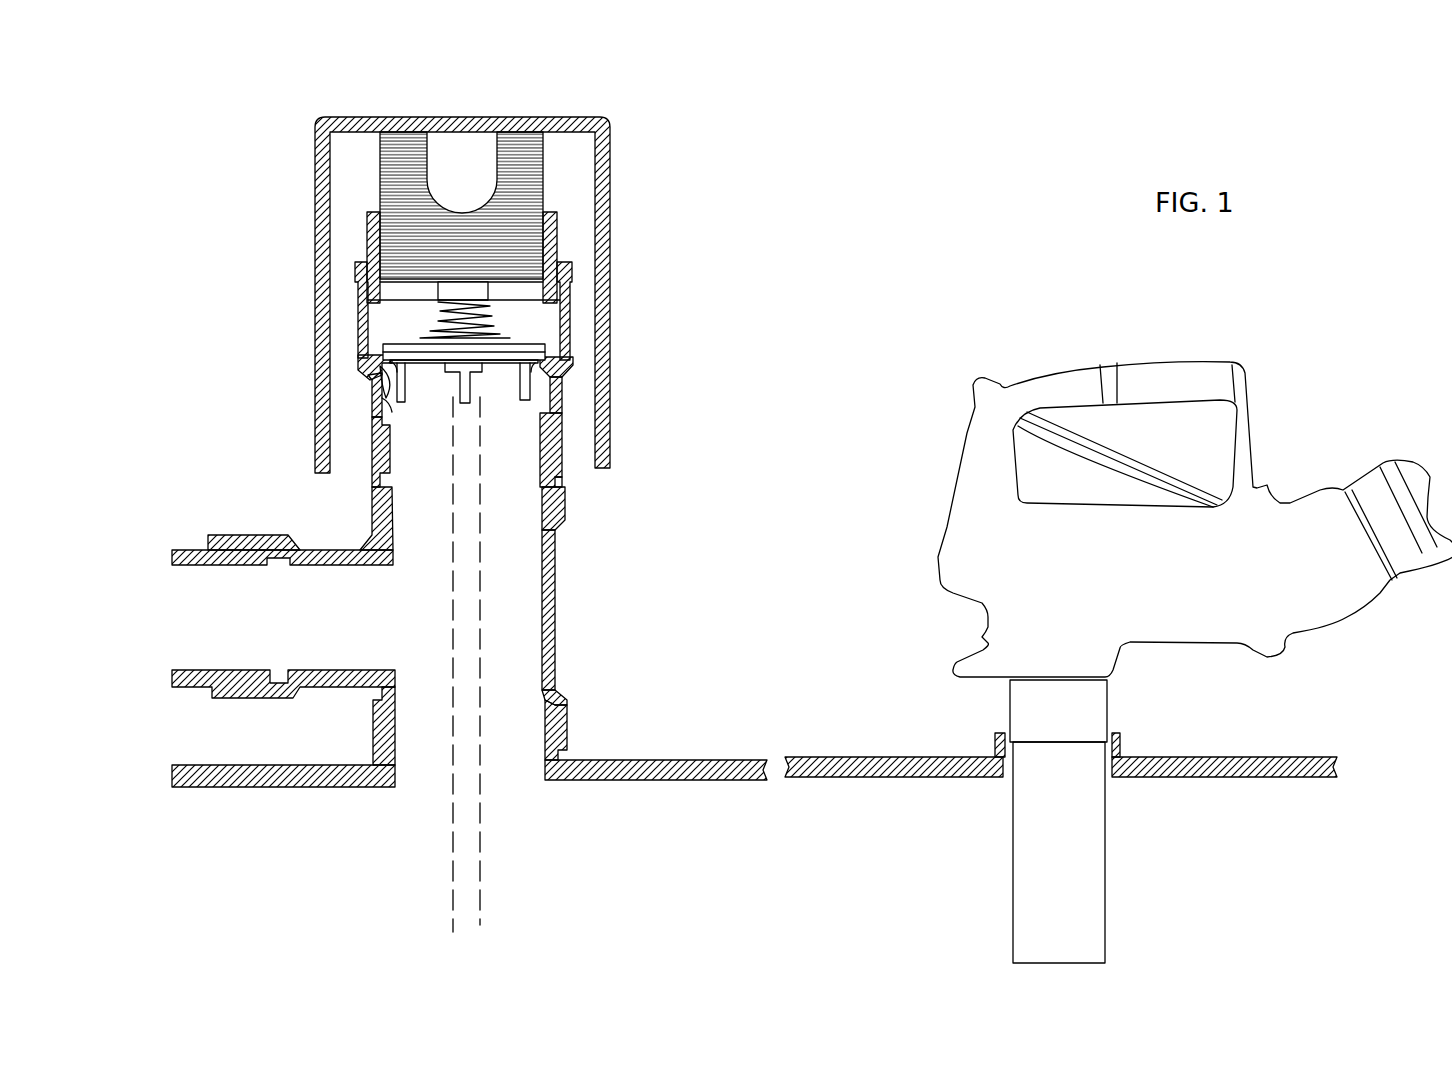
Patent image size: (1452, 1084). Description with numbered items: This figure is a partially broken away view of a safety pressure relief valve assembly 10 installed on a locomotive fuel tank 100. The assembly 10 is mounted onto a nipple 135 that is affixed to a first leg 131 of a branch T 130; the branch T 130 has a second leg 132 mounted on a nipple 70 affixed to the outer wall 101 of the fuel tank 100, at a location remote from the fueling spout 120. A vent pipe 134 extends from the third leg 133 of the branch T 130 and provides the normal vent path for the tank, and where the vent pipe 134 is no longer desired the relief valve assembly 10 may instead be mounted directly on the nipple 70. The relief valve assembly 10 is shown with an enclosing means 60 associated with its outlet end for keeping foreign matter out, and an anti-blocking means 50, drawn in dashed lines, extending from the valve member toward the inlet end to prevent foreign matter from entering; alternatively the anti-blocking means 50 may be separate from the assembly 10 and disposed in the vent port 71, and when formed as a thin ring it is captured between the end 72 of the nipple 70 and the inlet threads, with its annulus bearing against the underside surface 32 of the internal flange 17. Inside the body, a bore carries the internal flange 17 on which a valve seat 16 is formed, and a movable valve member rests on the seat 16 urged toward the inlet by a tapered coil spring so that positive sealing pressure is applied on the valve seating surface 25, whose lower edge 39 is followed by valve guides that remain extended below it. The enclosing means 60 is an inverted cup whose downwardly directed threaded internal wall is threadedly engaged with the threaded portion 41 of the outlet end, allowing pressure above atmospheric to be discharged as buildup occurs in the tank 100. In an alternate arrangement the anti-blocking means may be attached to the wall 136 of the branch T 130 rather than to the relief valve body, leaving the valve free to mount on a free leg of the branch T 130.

The safety pressure relief valve assembly 10 is at (715, 182).
The valve seat 16 is at (552, 362).
The internal flange 17 is at (568, 360).
The valve seating surface 25 is at (385, 350).
The underside surface 32 is at (372, 398).
The lower edge 39 is at (375, 420).
The threaded portion 41 is at (555, 240).
The anti-blocking means 50 is at (450, 878).
The enclosing means 60 is at (318, 130).
The nipple 70 is at (558, 757).
The vent port 71 is at (517, 775).
The end of nipple 72 is at (548, 703).
The locomotive fuel tank 100 is at (810, 923).
The outer wall 101 is at (227, 787).
The fueling spout 120 is at (993, 750).
The branch T 130 is at (665, 612).
The first leg 131 is at (565, 508).
The second leg 132 is at (570, 720).
The third leg 133 is at (240, 535).
The vent pipe 134 is at (185, 548).
The nipple 135 is at (553, 478).
The wall 136 is at (550, 585).